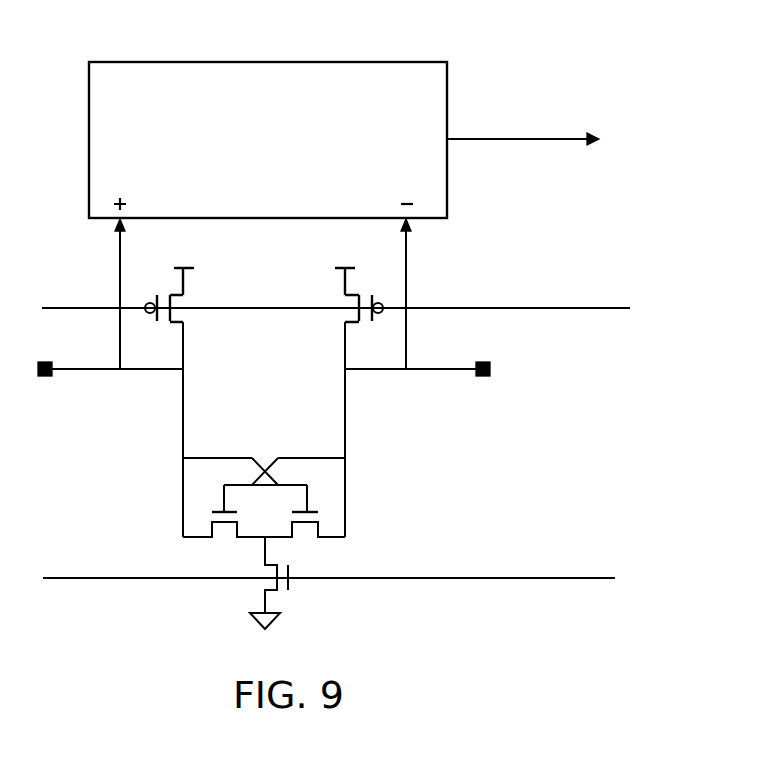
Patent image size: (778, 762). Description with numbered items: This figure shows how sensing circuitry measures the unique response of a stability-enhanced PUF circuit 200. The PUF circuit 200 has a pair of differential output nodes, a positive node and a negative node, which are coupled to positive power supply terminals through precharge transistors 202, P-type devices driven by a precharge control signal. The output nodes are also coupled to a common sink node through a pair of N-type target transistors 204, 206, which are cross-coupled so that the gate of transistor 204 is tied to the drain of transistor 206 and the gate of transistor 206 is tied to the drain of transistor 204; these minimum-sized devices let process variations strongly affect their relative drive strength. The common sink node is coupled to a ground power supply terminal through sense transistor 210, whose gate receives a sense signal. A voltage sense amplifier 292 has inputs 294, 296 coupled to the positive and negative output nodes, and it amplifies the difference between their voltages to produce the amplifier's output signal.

The PUF circuit 200 is at (590, 208).
The voltage sense amplifier 292 is at (265, 62).
The input of voltage sense amplifier 294 is at (109, 222).
The input of voltage sense amplifier 296 is at (418, 222).
The precharge transistors 202 is at (345, 300).
The transistor 204 is at (223, 538).
The transistor 206 is at (310, 538).
The sense transistor 210 is at (282, 590).